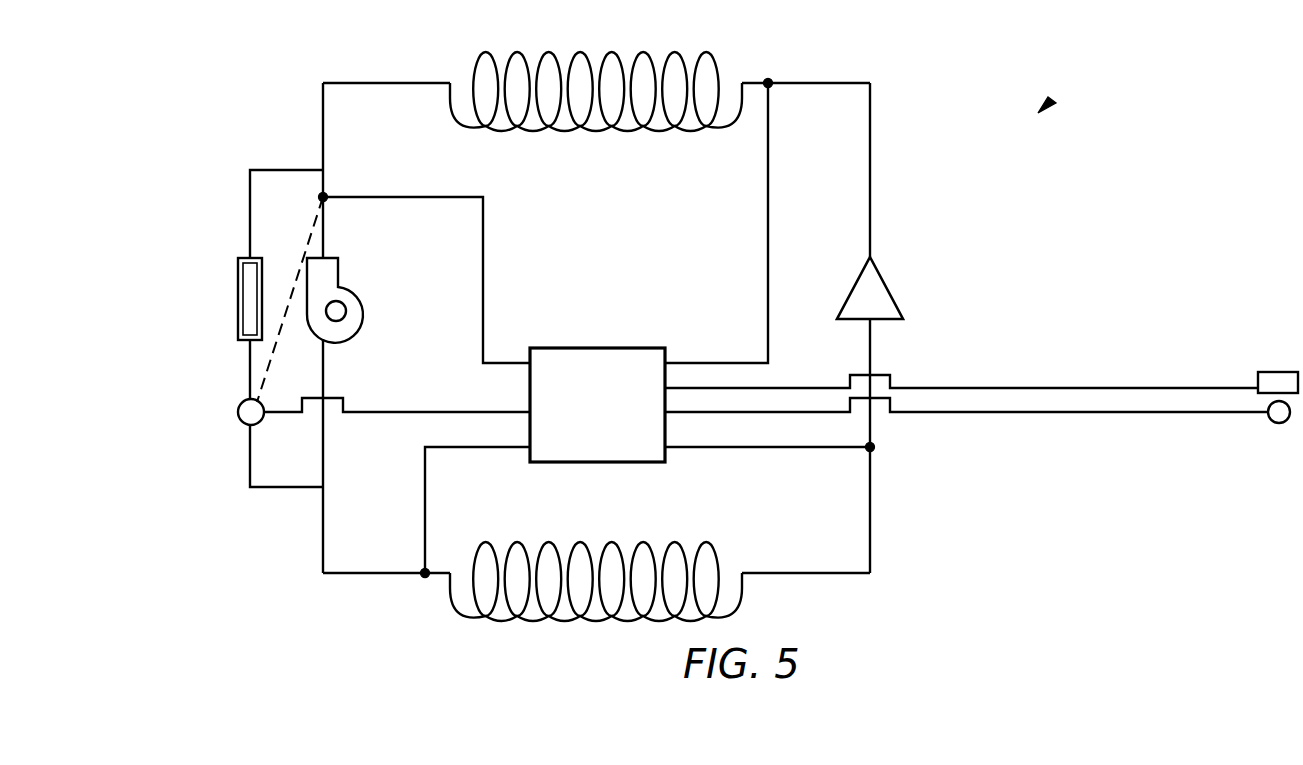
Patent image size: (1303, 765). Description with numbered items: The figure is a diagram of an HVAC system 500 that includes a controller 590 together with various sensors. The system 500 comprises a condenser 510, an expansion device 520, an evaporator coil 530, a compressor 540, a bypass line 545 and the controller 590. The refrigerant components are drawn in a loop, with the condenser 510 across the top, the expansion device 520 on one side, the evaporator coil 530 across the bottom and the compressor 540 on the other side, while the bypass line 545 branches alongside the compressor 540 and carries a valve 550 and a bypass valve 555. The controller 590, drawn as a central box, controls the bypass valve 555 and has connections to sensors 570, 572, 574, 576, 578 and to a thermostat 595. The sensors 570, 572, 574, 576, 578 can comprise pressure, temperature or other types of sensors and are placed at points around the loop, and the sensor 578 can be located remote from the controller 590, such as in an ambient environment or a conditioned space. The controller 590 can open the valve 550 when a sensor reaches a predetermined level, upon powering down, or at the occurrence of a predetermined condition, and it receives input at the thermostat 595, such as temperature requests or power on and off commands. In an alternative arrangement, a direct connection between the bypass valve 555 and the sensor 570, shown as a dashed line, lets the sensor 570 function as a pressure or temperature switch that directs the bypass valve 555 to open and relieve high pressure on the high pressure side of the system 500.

The system 500 is at (1052, 100).
The condenser 510 is at (613, 53).
The expansion device 520 is at (893, 320).
The evaporator coil 530 is at (561, 618).
The compressor 540 is at (358, 326).
The bypass line 545 is at (250, 185).
The valve 550 is at (238, 292).
The bypass valve 555 is at (238, 412).
The sensor 570 is at (326, 193).
The sensor 572 is at (771, 79).
The sensor 574 is at (875, 447).
The sensor 576 is at (421, 577).
The sensor 578 is at (1275, 424).
The controller 590 is at (597, 405).
The thermostat 595 is at (1266, 372).